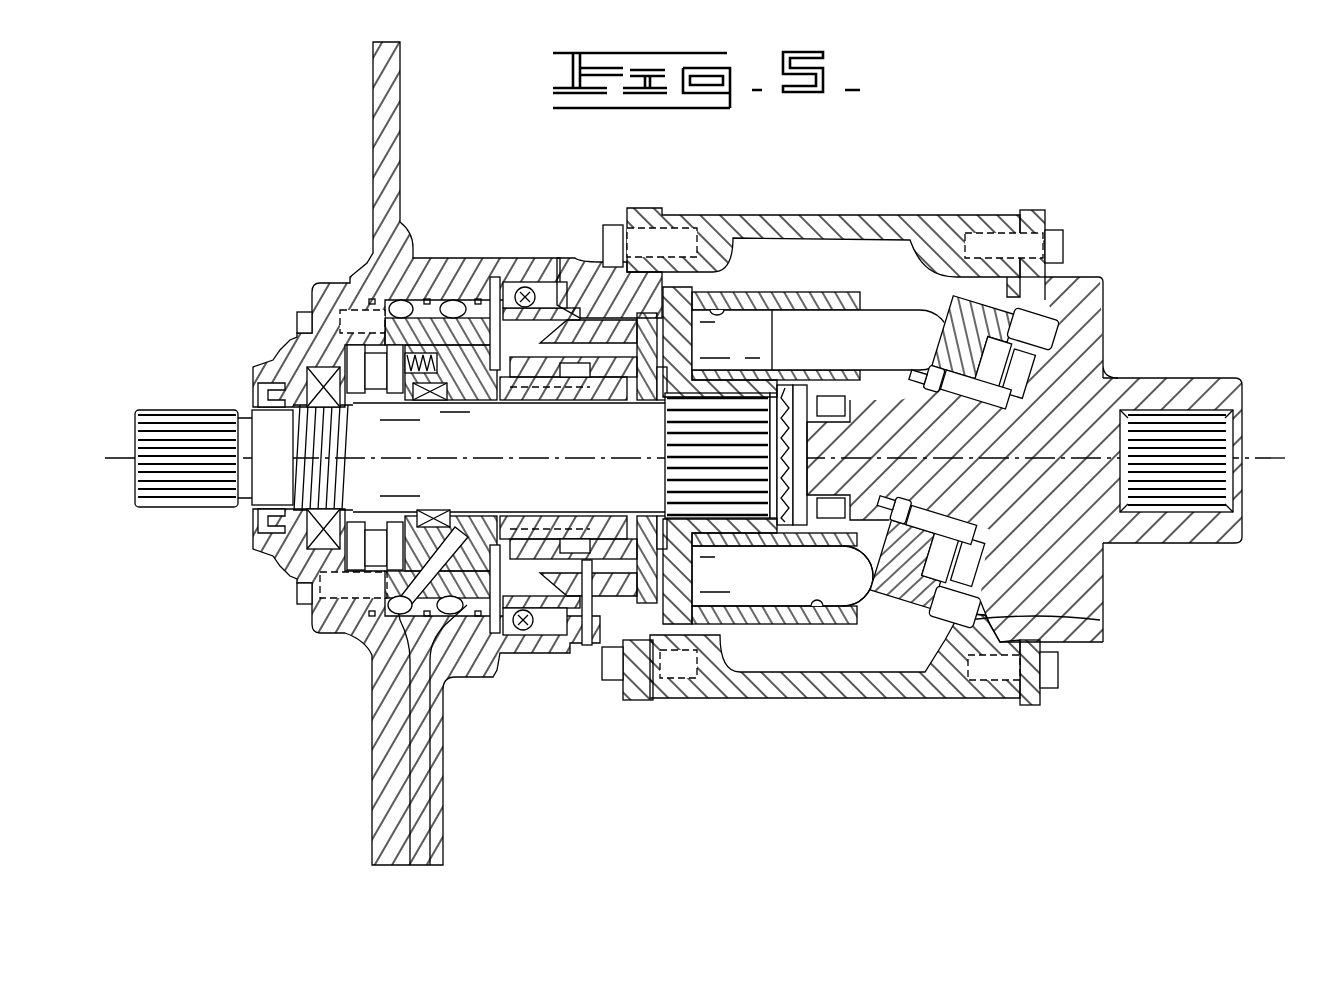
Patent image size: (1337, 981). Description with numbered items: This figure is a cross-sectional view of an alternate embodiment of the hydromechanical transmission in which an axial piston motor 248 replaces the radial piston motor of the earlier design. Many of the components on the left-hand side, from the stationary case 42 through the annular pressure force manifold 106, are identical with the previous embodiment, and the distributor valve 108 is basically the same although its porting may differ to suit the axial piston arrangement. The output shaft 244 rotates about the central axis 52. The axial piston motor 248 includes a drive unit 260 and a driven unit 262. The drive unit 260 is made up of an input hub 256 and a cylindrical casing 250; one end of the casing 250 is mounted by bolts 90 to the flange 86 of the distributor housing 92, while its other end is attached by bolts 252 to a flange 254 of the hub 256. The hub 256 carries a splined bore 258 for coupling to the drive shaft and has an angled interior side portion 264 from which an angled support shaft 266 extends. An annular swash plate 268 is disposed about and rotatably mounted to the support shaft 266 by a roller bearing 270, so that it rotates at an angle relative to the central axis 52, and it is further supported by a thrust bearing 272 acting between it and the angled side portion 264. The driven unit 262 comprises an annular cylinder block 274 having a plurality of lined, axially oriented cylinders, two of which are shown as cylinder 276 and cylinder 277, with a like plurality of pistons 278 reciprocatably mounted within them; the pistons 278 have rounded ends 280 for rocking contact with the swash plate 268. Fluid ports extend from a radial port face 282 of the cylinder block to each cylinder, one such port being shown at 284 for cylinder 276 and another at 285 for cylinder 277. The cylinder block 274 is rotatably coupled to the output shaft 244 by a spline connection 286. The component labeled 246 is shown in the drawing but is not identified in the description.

The stationary case 42 is at (382, 127).
The central axis 52 is at (110, 452).
The flange 86 is at (635, 702).
The bolts 90 is at (605, 683).
The distributor housing 92 is at (600, 262).
The annular pressure force manifold 106 is at (533, 352).
The distributor valve 108 is at (592, 582).
The output shaft 244 is at (207, 507).
The output hub 246 is at (1246, 385).
The axial piston motor 248 is at (963, 208).
The cylindrical casing 250 is at (868, 700).
The bolts 252 is at (1050, 678).
The flange 254 is at (1037, 707).
The input hub 256 is at (1092, 600).
The splined bore 258 is at (1227, 490).
The drive unit 260 is at (1108, 318).
The driven unit 262 is at (787, 290).
The angled interior side portion 264 is at (1095, 620).
The angled support shaft 266 is at (957, 614).
The annular swash plate 268 is at (1045, 285).
The roller bearing 270 is at (948, 335).
The thrust bearing 272 is at (1037, 370).
The annular cylinder block 274 is at (825, 292).
The cylinder 276 is at (715, 312).
The cylinder 277 is at (816, 608).
The pistons 278 is at (820, 352).
The rounded ends 280 is at (856, 592).
The radial port face 282 is at (650, 313).
The fluid port 284 is at (672, 350).
The fluid port 285 is at (692, 560).
The spline connection 286 is at (690, 500).